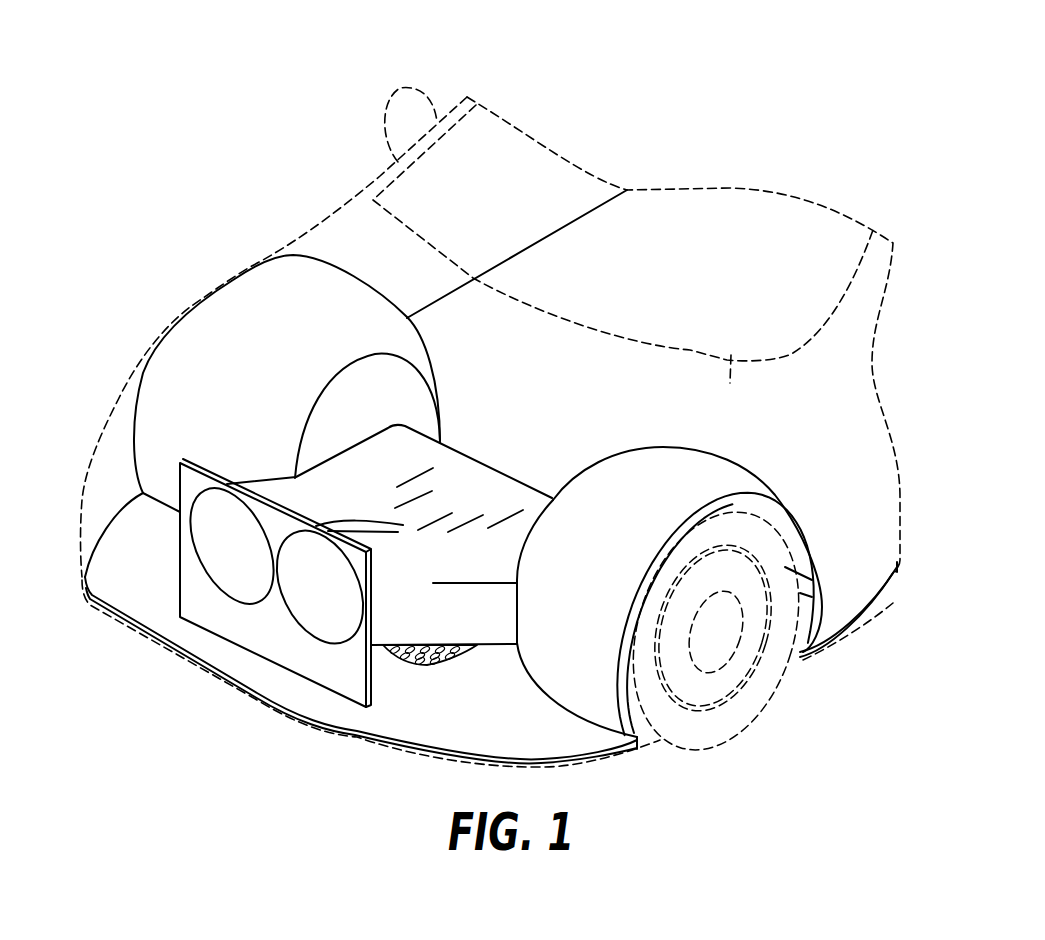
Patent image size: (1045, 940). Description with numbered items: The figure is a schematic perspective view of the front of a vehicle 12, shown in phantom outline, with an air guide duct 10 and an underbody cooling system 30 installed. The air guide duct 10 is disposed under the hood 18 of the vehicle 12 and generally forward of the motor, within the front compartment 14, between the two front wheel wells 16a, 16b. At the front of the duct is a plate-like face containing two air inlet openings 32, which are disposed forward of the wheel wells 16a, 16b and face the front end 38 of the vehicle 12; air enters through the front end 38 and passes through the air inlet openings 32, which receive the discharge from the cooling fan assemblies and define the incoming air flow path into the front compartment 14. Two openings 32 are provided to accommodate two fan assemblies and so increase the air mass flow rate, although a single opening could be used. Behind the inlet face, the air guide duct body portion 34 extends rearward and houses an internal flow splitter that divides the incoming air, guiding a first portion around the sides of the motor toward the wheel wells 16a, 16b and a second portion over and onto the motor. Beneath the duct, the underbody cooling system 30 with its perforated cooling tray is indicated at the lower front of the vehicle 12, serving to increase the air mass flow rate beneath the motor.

The air guide duct 10 is at (390, 621).
The vehicle 12 is at (873, 255).
The front compartment 14 is at (577, 362).
The wheel well 16a is at (205, 355).
The wheel well 16b is at (627, 473).
The hood 18 is at (731, 352).
The underbody cooling system 30 is at (411, 665).
The air inlet opening 32 is at (297, 593).
The air guide duct body portion 34 is at (473, 480).
The front end 38 is at (132, 546).